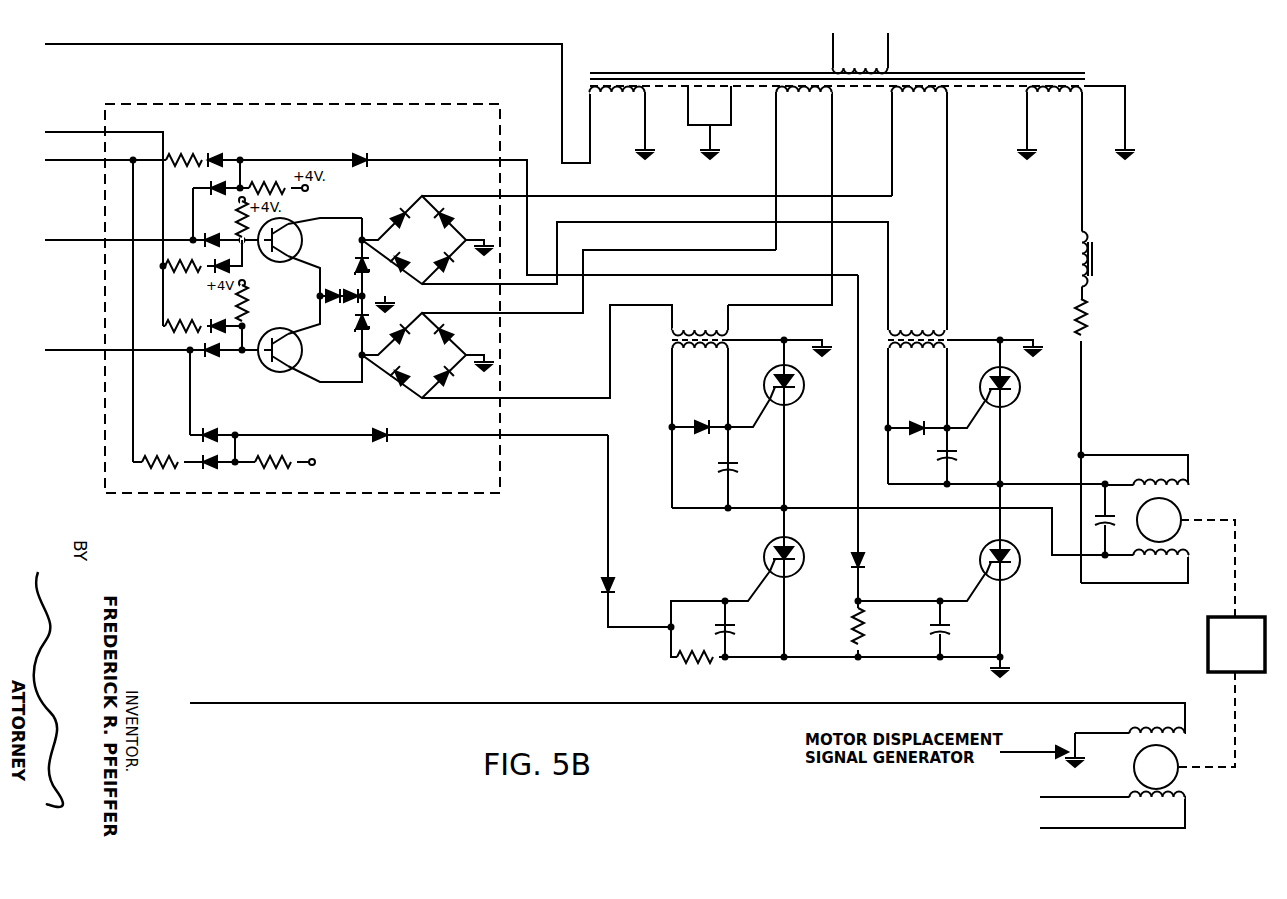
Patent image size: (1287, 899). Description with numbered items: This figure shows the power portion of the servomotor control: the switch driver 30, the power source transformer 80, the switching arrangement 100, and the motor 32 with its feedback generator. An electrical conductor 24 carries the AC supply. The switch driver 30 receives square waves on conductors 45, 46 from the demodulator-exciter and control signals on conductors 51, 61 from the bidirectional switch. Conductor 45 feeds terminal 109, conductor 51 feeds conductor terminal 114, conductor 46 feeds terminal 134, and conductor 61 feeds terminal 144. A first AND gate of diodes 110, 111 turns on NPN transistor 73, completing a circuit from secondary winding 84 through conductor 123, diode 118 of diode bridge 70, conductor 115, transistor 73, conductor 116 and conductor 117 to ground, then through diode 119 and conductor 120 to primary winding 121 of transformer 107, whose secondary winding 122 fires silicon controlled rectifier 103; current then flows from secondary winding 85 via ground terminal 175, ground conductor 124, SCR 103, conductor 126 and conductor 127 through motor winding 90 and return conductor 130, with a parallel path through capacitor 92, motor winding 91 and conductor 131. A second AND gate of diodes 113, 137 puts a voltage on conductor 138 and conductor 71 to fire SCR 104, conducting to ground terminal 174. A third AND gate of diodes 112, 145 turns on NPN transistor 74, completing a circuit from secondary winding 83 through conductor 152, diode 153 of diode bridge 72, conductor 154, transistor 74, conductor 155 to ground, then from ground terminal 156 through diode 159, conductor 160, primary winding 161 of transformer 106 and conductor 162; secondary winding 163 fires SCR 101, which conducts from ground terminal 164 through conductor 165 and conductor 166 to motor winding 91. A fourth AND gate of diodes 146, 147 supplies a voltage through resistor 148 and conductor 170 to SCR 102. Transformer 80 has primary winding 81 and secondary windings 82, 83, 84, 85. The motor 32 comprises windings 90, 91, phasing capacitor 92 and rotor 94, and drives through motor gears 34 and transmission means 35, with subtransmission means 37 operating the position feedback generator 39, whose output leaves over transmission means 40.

The electrical conductor 24 is at (148, 44).
The switch driver 30 is at (350, 104).
The conductor 45 is at (78, 132).
The conductor 46 is at (82, 160).
The conductor 51 is at (84, 240).
The conductor 61 is at (84, 350).
The terminal 134 is at (140, 160).
The diode 137 is at (215, 155).
The diode 113 is at (215, 188).
The conductor 138 is at (400, 160).
The conductor terminal 114 is at (192, 240).
The diode 110 is at (212, 240).
The terminal 109 is at (165, 268).
The diode 111 is at (228, 268).
The diode 112 is at (217, 324).
The terminal 144 is at (189, 355).
The diode 145 is at (212, 358).
The NPN transistor 73 is at (280, 218).
The NPN transistor 74 is at (275, 330).
The conductor 154 is at (342, 382).
The conductor 155 is at (328, 318).
The conductor 116 is at (318, 292).
The conductor 117 is at (388, 302).
The conductor 115 is at (360, 168).
The diode bridge 70 is at (430, 206).
The diode 118 is at (396, 216).
The diode 119 is at (440, 258).
The diode bridge 72 is at (445, 338).
The diode 153 is at (408, 338).
The diode 159 is at (420, 386).
The ground terminal 156 is at (484, 392).
The diode 146 is at (210, 430).
The diode 147 is at (212, 466).
The resistor 148 is at (272, 462).
The conductor 170 is at (402, 437).
The conductor 71 is at (530, 194).
The conductor 123 is at (690, 196).
The conductor 120 is at (610, 222).
The conductor 152 is at (786, 152).
The conductor 162 is at (845, 152).
The conductor 160 is at (612, 386).
The power source transformer 80 is at (776, 54).
The primary winding 81 is at (856, 60).
The secondary winding 82 is at (633, 96).
The secondary winding 83 is at (816, 96).
The secondary winding 84 is at (932, 96).
The secondary winding 85 is at (1068, 96).
The ground terminal 175 is at (1024, 140).
The primary winding 161 is at (686, 324).
The transformer 106 is at (660, 342).
The secondary winding 163 is at (676, 352).
The ground terminal 164 is at (826, 352).
The conductor 165 is at (786, 462).
The silicon controlled rectifier 101 is at (802, 390).
The conductor 166 is at (874, 510).
The switching arrangement 100 is at (690, 556).
The silicon controlled rectifier 102 is at (802, 570).
The silicon controlled rectifier 104 is at (1018, 572).
The ground terminal 174 is at (1008, 666).
The transformer 107 is at (918, 322).
The primary winding 121 is at (928, 328).
The secondary winding 122 is at (918, 352).
The ground conductor 124 is at (1038, 354).
The silicon controlled rectifier 103 is at (1020, 392).
The conductor 126 is at (1002, 458).
The conductor 127 is at (1012, 486).
The return conductor 130 is at (1084, 340).
The conductor 131 is at (1188, 582).
The motor 32 is at (1159, 517).
The motor winding 90 is at (1152, 480).
The motor winding 91 is at (1150, 558).
The phasing capacitor 92 is at (1104, 518).
The rotor 94 is at (1181, 524).
The mechanical transmission means 35 is at (1226, 516).
The motor gears 34 is at (1208, 640).
The subtransmission means 37 is at (1236, 744).
The position feedback generator 39 is at (1134, 764).
The transmission means 40 is at (470, 702).